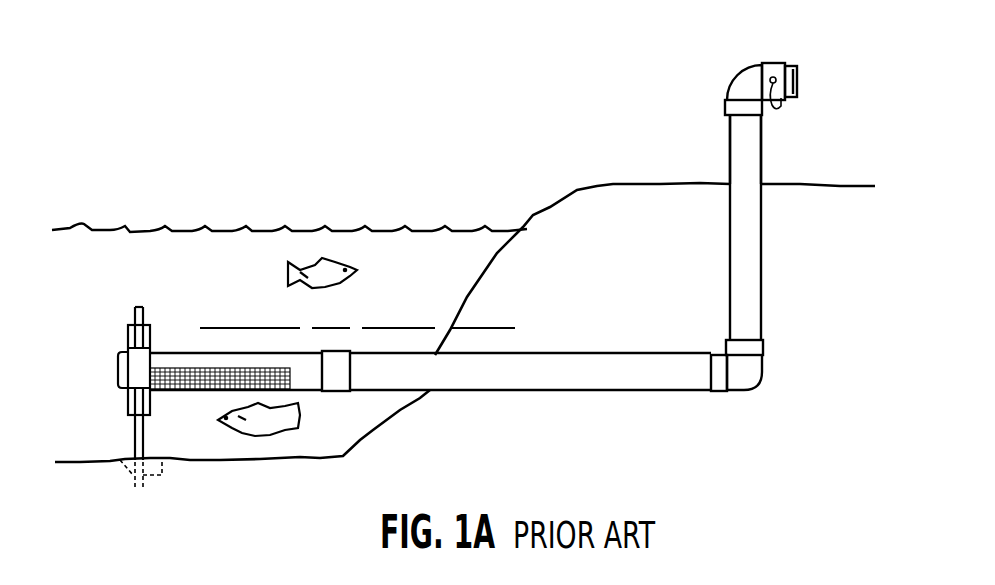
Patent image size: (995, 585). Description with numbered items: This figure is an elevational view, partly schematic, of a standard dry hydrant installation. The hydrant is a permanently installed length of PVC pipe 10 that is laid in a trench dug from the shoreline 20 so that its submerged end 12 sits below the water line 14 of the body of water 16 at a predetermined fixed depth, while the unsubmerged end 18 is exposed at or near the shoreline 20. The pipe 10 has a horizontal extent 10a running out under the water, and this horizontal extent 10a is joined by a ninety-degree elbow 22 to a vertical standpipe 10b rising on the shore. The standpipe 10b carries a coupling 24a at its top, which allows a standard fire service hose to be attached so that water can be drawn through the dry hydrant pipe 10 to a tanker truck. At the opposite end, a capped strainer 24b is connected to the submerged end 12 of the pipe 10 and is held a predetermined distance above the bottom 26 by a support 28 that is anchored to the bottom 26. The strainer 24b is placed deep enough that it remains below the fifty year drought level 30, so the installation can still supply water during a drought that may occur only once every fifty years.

The pipe 10 is at (607, 400).
The horizontal extent 10a is at (600, 363).
The vertical standpipe 10b is at (753, 272).
The submerged end 12 is at (370, 380).
The water line 14 is at (420, 232).
The body of water 16 is at (104, 292).
The unsubmerged end 18 is at (755, 146).
The shoreline 20 is at (593, 185).
The elbow 22 is at (748, 372).
The coupling 24a is at (745, 78).
The capped strainer 24b is at (178, 353).
The bottom 26 is at (83, 462).
The support 28 is at (150, 397).
The fifty year drought level 30 is at (358, 327).